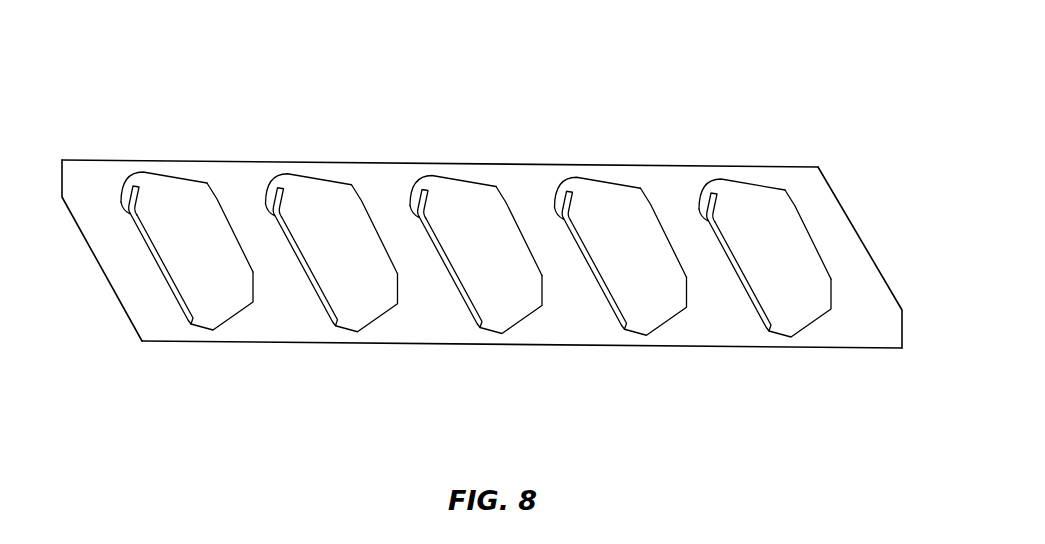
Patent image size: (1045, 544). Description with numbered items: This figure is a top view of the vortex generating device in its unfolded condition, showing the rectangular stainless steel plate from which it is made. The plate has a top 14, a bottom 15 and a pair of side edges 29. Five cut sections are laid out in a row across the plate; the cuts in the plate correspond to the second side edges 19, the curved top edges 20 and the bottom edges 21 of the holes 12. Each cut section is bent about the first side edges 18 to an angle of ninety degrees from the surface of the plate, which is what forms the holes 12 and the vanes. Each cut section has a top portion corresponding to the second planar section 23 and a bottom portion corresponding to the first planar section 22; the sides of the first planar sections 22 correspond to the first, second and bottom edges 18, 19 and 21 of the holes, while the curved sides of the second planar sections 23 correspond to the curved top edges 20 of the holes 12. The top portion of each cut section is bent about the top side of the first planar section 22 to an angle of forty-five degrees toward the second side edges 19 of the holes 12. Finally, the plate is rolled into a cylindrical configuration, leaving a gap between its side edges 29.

The hole 12 is at (486, 259).
The top 14 is at (489, 248).
The bottom 15 is at (185, 343).
The first side edge 18 is at (418, 264).
The second side edge 19 is at (213, 200).
The curved top edge 20 is at (462, 178).
The bottom edge 21 is at (378, 322).
The first planar section 22 is at (322, 310).
The second planar section 23 is at (282, 190).
The side edge 29 is at (90, 248).